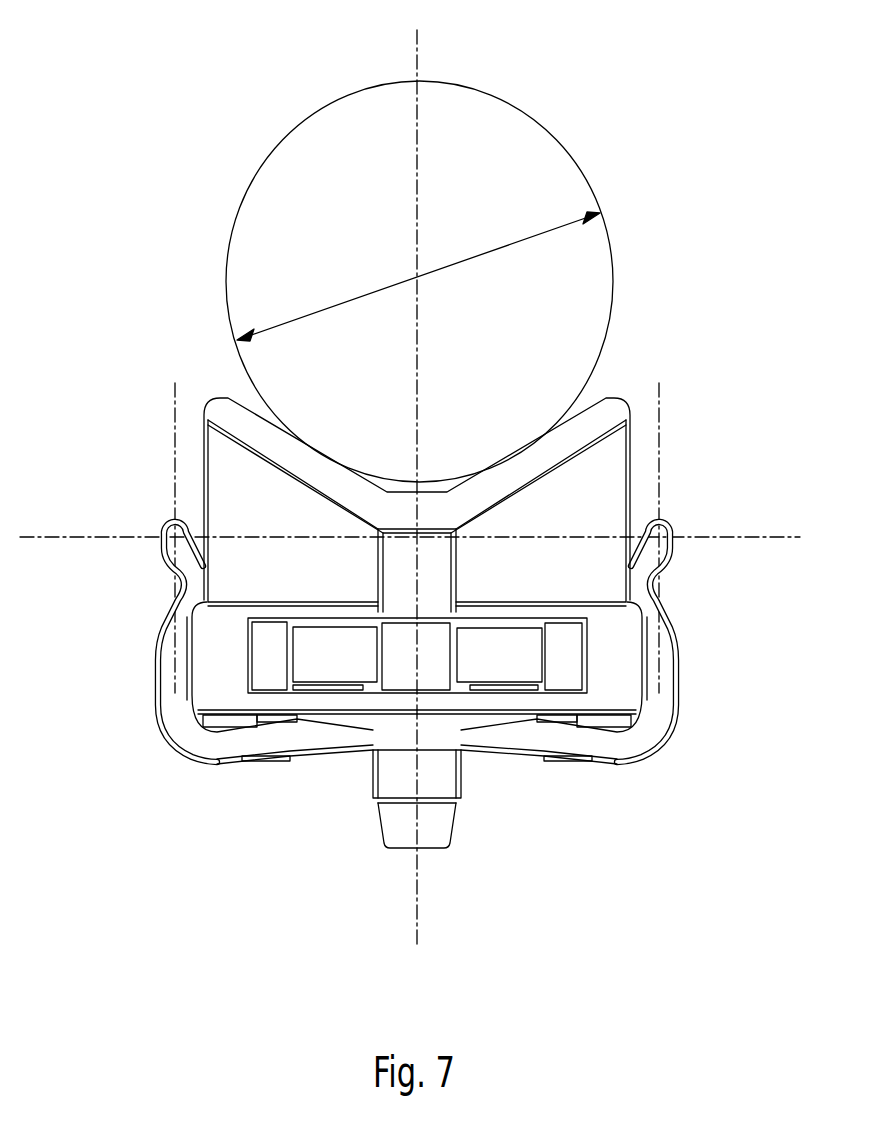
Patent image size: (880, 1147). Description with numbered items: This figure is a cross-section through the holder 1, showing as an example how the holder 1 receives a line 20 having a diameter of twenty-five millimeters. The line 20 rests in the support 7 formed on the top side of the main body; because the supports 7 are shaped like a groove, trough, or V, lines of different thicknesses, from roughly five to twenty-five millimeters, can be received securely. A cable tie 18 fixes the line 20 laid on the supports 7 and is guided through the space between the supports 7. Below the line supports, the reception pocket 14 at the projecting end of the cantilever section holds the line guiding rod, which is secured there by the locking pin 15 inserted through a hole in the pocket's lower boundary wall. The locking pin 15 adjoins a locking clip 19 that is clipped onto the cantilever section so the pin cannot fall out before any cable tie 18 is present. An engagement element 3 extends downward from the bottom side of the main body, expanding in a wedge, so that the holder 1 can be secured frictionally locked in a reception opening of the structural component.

The holder 1 is at (646, 905).
The engagement element 3 is at (383, 777).
The support 7 is at (627, 405).
The reception pocket 14 is at (467, 670).
The locking pin 15 is at (423, 678).
The cable tie 18 is at (594, 377).
The locking clip 19 is at (183, 727).
The line 20 is at (578, 158).